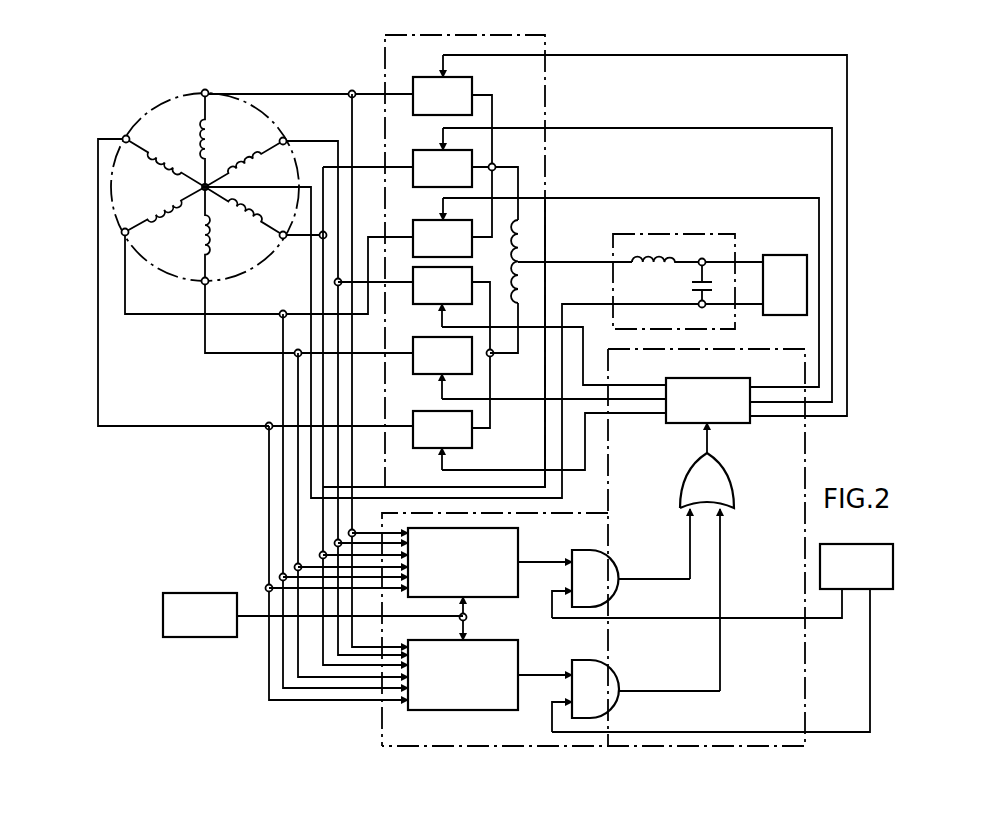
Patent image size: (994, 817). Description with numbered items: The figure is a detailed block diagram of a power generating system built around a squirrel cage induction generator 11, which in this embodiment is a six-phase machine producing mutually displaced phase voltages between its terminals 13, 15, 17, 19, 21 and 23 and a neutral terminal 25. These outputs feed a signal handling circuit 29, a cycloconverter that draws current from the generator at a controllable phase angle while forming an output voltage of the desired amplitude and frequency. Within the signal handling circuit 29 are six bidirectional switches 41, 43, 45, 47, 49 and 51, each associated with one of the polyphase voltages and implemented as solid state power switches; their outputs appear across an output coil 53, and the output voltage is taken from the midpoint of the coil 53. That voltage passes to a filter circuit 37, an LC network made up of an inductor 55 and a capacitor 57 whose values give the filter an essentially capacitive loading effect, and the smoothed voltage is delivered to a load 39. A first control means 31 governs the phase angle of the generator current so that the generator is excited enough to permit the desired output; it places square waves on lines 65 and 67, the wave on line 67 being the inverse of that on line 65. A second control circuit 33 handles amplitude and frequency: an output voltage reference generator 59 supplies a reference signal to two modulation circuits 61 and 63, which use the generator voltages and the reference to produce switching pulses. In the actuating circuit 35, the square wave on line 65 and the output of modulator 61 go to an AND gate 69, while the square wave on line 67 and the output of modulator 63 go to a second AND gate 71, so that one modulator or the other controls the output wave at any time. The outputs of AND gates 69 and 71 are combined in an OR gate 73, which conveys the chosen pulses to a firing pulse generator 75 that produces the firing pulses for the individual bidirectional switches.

The squirrel cage induction generator 11 is at (163, 112).
The terminal 13 is at (207, 92).
The terminal 15 is at (286, 141).
The terminal 17 is at (285, 238).
The terminal 19 is at (207, 285).
The terminal 21 is at (123, 236).
The terminal 23 is at (124, 137).
The neutral terminal 25 is at (183, 414).
The signal handling circuit 29 is at (545, 28).
The first control means 31 is at (865, 576).
The second control circuit 33 is at (382, 718).
The actuating circuit 35 is at (839, 702).
The filter circuit 37 is at (735, 318).
The load 39 is at (794, 295).
The bidirectional switch 41 is at (416, 78).
The bidirectional switch 43 is at (416, 151).
The bidirectional switch 45 is at (416, 221).
The bidirectional switch 47 is at (414, 282).
The bidirectional switch 49 is at (416, 338).
The bidirectional switch 51 is at (416, 412).
The output coil 53 is at (516, 252).
The inductor 55 is at (650, 262).
The capacitor 57 is at (692, 288).
The output voltage reference generator 59 is at (209, 625).
The modulation circuit 61 is at (464, 685).
The modulation circuit 63 is at (471, 572).
The line 65 is at (713, 732).
The line 67 is at (690, 618).
The AND gate 69 is at (599, 699).
The second AND gate 71 is at (599, 589).
The OR gate 73 is at (717, 494).
The firing pulse generator 75 is at (717, 410).